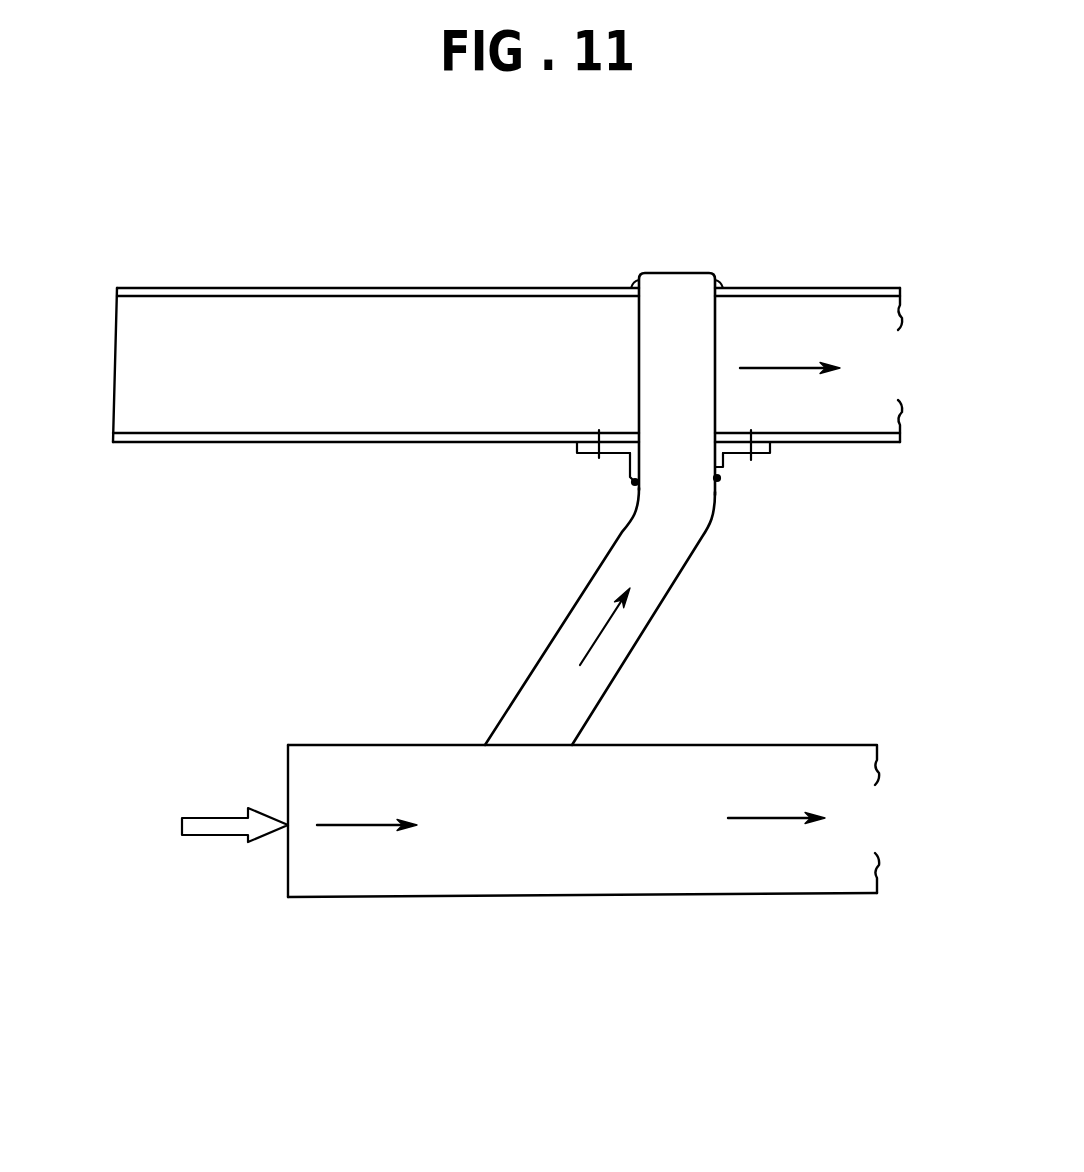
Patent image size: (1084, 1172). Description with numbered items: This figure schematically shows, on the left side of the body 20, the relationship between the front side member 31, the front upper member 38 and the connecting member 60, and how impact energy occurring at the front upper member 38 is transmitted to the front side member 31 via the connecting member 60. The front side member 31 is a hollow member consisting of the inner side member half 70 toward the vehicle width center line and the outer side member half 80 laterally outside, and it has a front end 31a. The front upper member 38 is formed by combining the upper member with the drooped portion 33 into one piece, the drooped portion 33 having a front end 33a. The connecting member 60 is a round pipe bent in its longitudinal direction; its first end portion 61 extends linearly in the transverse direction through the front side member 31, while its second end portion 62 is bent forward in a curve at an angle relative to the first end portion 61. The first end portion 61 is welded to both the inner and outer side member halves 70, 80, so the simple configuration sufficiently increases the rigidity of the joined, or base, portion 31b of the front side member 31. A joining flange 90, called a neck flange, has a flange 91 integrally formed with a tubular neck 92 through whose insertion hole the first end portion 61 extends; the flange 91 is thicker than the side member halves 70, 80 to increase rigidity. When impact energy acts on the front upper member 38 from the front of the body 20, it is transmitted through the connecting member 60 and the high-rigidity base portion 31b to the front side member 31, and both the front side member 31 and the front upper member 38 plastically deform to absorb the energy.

The body 20 is at (138, 143).
The front side member 31 is at (415, 178).
The inner side member half 70 is at (278, 293).
The outer side member half 80 is at (372, 433).
The front end of front side member 31a is at (113, 402).
The joined portion (base portion) of front side member 31b is at (740, 348).
The connecting member 60 is at (573, 458).
The first end portion 61 is at (658, 370).
The second end portion 62 is at (563, 620).
The joining flange 90 is at (866, 487).
The flange 91 is at (757, 455).
The neck 92 is at (720, 470).
The drooped portion 33 is at (655, 862).
The front end of drooped portion 33a is at (285, 867).
The front upper member 38 is at (513, 898).